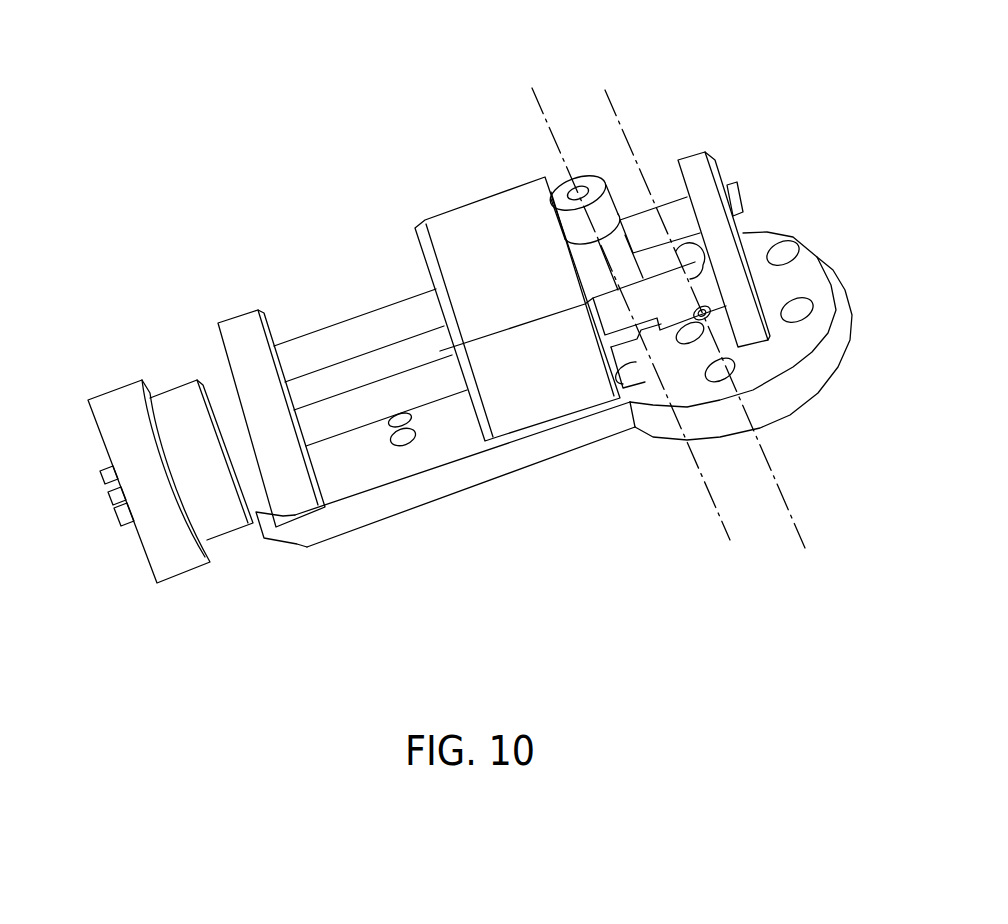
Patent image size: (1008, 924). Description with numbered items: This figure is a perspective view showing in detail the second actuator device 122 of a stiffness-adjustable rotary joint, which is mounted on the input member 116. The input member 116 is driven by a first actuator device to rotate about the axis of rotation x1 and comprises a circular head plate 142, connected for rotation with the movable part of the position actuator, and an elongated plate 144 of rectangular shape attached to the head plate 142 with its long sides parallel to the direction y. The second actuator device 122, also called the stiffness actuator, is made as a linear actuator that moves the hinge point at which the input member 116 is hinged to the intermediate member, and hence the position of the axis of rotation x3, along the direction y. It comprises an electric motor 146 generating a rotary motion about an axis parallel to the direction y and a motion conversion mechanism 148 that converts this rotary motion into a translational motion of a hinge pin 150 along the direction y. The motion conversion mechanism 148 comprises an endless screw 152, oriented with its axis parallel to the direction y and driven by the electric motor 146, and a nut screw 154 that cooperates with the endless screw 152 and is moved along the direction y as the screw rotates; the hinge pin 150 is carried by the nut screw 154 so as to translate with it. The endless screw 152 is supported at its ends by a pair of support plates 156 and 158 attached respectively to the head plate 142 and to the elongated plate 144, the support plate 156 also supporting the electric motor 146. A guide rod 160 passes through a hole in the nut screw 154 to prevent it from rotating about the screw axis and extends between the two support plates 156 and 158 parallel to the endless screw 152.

The input member 116 is at (497, 371).
The second actuator device 122 is at (170, 426).
The head plate 142 is at (730, 423).
The elongated plate 144 is at (398, 490).
The electric motor 146 is at (177, 560).
The motion conversion mechanism 148 is at (515, 434).
The hinge pin 150 is at (592, 178).
The endless screw 152 is at (342, 408).
The nut screw 154 is at (462, 240).
The support plate 156 is at (713, 168).
The support plate 158 is at (247, 313).
The guide rod 160 is at (370, 317).
The axis of rotation x1 is at (628, 136).
The axis of rotation x3 is at (551, 86).